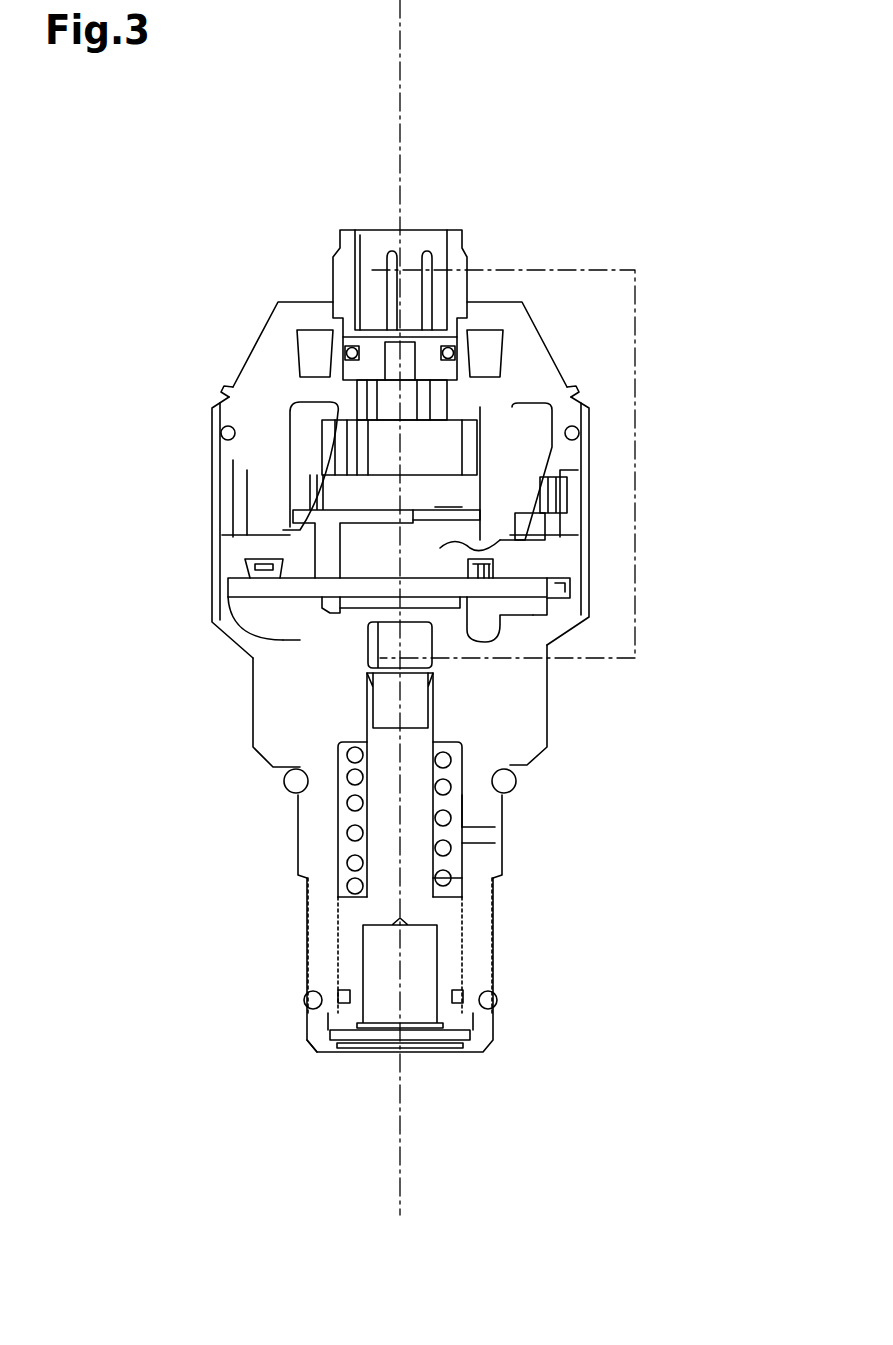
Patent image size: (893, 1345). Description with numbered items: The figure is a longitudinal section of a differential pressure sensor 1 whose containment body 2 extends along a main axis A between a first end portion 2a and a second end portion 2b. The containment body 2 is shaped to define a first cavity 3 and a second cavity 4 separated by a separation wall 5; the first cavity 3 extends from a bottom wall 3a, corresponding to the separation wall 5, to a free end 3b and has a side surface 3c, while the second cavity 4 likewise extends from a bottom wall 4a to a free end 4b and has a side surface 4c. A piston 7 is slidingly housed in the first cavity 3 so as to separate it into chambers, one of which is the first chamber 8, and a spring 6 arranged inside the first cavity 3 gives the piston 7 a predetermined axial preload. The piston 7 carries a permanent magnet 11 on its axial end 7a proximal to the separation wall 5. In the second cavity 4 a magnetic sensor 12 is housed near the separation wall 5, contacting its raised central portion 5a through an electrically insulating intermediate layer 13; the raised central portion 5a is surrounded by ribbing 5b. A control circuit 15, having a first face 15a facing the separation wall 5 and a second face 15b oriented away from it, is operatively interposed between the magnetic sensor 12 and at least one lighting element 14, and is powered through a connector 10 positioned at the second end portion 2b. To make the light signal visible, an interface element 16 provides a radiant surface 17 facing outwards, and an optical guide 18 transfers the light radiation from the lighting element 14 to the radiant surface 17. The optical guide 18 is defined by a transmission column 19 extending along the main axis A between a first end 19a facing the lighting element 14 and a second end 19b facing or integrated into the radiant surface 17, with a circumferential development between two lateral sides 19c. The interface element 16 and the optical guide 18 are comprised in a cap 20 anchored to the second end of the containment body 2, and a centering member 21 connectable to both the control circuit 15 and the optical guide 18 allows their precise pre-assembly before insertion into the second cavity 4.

The differential pressure sensor 1 is at (600, 204).
The containment body 2 is at (487, 1048).
The first end portion 2a is at (313, 1051).
The second end portion 2b is at (583, 398).
The first cavity 3 is at (352, 850).
The bottom wall 3a is at (402, 620).
The free end 3b is at (335, 1023).
The side surface 3c is at (455, 803).
The second cavity 4 is at (303, 553).
The bottom wall 4a is at (565, 614).
The free end 4b is at (226, 392).
The side surface 4c is at (223, 459).
The separation wall 5 is at (385, 626).
The raised central portion 5a is at (328, 610).
The ribbing 5b is at (548, 645).
The spring 6 is at (448, 878).
The piston 7 is at (350, 943).
The axial end 7a is at (369, 743).
The first chamber 8 is at (455, 863).
The connector 10 is at (348, 230).
The permanent magnet 11 is at (417, 712).
The magnetic sensor 12 is at (400, 600).
The electrically insulating intermediate layer 13 is at (343, 620).
The lighting element 14 is at (247, 568).
The control circuit 15 is at (249, 597).
The first face 15a is at (280, 599).
The second face 15b is at (546, 576).
The interface element 16 is at (501, 358).
The radiant surface 17 is at (560, 318).
The optical guide 18 is at (526, 469).
The transmission column 19 is at (391, 476).
The first end 19a is at (500, 545).
The second end 19b is at (548, 373).
The lateral sides 19c is at (525, 438).
The cap 20 is at (247, 337).
The centering member 21 is at (540, 537).
The main axis A is at (400, 1198).